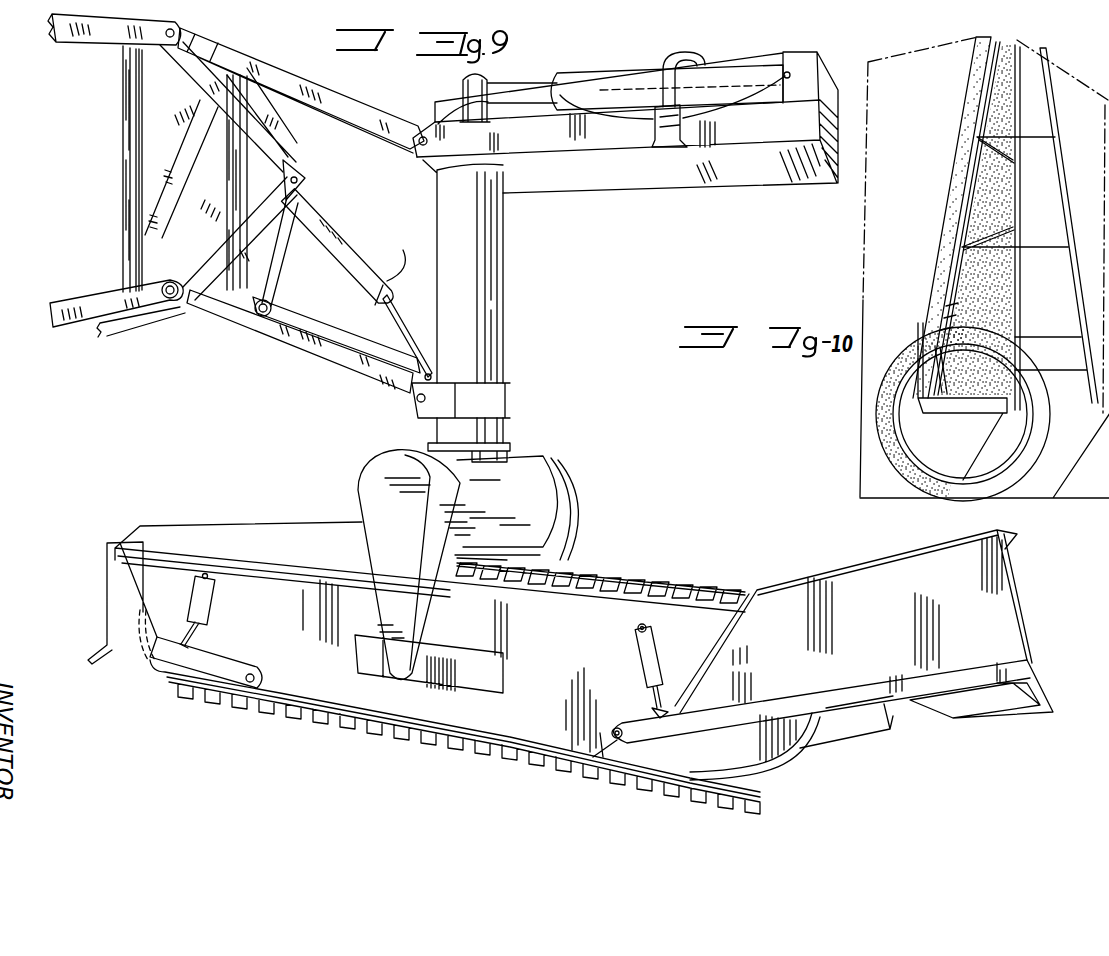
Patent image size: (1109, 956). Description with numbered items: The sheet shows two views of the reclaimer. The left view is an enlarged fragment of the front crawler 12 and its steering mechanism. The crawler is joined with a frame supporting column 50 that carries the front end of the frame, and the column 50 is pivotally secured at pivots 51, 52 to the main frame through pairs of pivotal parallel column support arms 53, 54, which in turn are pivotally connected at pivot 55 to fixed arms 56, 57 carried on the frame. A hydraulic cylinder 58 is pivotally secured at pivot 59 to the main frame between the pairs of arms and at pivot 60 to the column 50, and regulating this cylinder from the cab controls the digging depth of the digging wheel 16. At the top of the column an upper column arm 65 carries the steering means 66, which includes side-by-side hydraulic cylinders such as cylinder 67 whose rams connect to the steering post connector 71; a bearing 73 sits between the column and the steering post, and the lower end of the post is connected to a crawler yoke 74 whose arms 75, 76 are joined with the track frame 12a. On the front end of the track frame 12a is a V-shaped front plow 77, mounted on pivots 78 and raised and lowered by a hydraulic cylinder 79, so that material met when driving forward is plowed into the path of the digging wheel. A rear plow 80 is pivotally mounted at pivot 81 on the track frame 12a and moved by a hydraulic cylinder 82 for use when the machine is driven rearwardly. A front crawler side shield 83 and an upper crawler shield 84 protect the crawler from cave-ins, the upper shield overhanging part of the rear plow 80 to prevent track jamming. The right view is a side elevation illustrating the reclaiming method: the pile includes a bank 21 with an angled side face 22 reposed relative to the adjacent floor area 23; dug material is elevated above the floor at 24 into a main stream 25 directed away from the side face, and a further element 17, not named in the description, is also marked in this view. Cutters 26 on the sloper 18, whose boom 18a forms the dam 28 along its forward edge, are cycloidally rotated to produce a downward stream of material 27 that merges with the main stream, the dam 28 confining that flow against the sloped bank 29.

In FIG. 9, the front crawler 12 is at (709, 571).
In FIG. 9, the track frame 12a is at (457, 680).
In FIG. 10, the digging wheel 16 is at (906, 348).
In FIG. 10, the base plate 17 is at (959, 420).
In FIG. 10, the sloper 18 is at (952, 290).
In FIG. 10, the boom 18a is at (1077, 270).
In FIG. 10, the bank 21 is at (866, 378).
In FIG. 10, the angled side face 22 is at (862, 473).
In FIG. 10, the floor area 23 is at (879, 498).
In FIG. 10, the elevation point of dug material 24 is at (876, 408).
In FIG. 10, the main stream of material 25 is at (946, 392).
In FIG. 10, the cutters 26 is at (944, 318).
In FIG. 10, the downward stream of flowing material 27 is at (980, 277).
In FIG. 10, the dam 28 is at (1006, 308).
In FIG. 10, the sloped bank 29 is at (950, 187).
In FIG. 9, the frame supporting column 50 is at (498, 304).
In FIG. 9, the pivot 51 is at (419, 150).
In FIG. 9, the pivot 52 is at (415, 405).
In FIG. 9, the column support arms 53 is at (352, 78).
In FIG. 9, the column support arms 54 is at (310, 364).
In FIG. 9, the pivot 55 is at (169, 299).
In FIG. 9, the fixed arm 56 is at (93, 30).
In FIG. 9, the fixed arm 57 is at (87, 304).
In FIG. 9, the hydraulic cylinder 58 is at (345, 236).
In FIG. 9, the pivot 59 is at (300, 176).
In FIG. 9, the pivot 60 is at (427, 368).
In FIG. 9, the upper column arm 65 is at (590, 178).
In FIG. 9, the steering means 66 is at (629, 65).
In FIG. 9, the hydraulic cylinder 67 is at (638, 85).
In FIG. 9, the steering post connector 71 is at (466, 91).
In FIG. 9, the bearing 73 is at (511, 448).
In FIG. 9, the crawler yoke 74 is at (520, 495).
In FIG. 9, the yoke arm 75 is at (378, 507).
In FIG. 9, the yoke arm 76 is at (568, 525).
In FIG. 9, the V-shaped front plow 77 is at (1045, 604).
In FIG. 9, the pivots 78 is at (610, 740).
In FIG. 9, the hydraulic cylinder 79 is at (643, 652).
In FIG. 9, the rear plow 80 is at (115, 607).
In FIG. 9, the pivot 81 is at (250, 692).
In FIG. 9, the hydraulic cylinder 82 is at (200, 607).
In FIG. 9, the front crawler side shield 83 is at (533, 723).
In FIG. 9, the upper crawler shield 84 is at (241, 530).